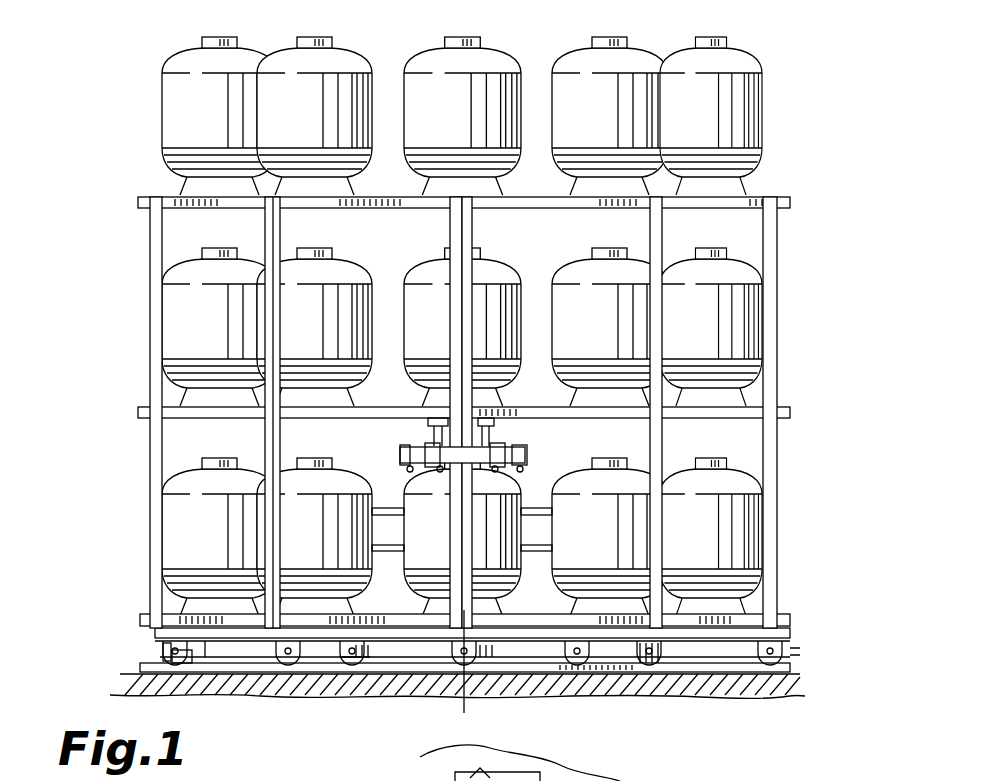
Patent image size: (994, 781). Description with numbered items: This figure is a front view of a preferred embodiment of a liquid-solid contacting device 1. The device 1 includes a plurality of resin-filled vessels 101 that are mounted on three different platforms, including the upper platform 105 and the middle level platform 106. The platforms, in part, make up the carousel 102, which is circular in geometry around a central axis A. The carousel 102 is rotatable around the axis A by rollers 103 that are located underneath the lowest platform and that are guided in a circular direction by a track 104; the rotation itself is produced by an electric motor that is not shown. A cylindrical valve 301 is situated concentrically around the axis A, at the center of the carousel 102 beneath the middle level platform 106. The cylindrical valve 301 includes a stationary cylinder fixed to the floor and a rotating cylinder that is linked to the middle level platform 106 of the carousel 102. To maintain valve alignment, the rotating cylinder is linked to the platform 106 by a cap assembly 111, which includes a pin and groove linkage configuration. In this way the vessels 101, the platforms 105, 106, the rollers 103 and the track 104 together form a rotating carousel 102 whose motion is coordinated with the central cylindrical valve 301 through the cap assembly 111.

The liquid-solid contacting device 1 is at (478, 387).
The resin-filled vessels 101 is at (492, 118).
The carousel 102 is at (778, 325).
The rollers 103 is at (165, 652).
The track 104 is at (790, 632).
The platform 105 is at (785, 202).
The middle level platform 106 is at (790, 412).
The cap assembly 111 is at (495, 430).
The cylindrical valve 301 is at (525, 457).
The axis A is at (464, 707).